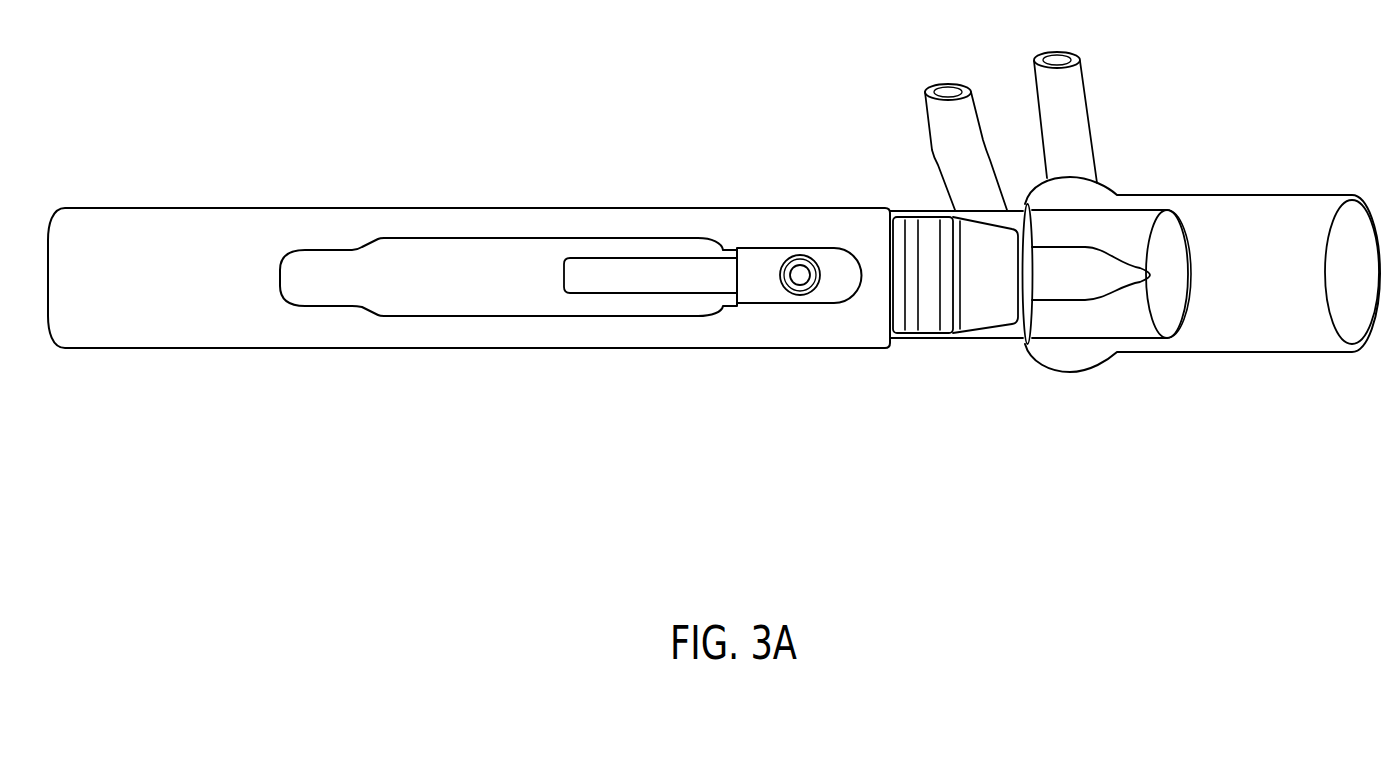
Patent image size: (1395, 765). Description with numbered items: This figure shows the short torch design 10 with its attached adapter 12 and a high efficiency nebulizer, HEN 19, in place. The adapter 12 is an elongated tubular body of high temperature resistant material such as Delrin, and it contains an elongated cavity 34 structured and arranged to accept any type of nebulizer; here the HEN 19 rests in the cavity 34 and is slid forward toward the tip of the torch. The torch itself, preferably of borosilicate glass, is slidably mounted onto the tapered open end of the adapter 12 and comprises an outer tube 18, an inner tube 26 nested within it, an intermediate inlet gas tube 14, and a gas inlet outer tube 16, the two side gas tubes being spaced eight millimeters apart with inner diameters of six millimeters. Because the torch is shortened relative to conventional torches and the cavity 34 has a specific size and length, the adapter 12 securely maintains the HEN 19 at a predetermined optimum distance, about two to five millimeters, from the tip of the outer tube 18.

The short torch design 10 is at (714, 280).
The adapter 12 is at (204, 223).
The intermediate inlet gas tube 14 is at (925, 117).
The gas inlet outer tube 16 is at (1090, 118).
The outer tube 18 is at (1240, 193).
The high efficiency nebulizer (HEN) 19 is at (757, 262).
The inner tube 26 is at (1170, 338).
The elongated cavity 34 is at (476, 258).